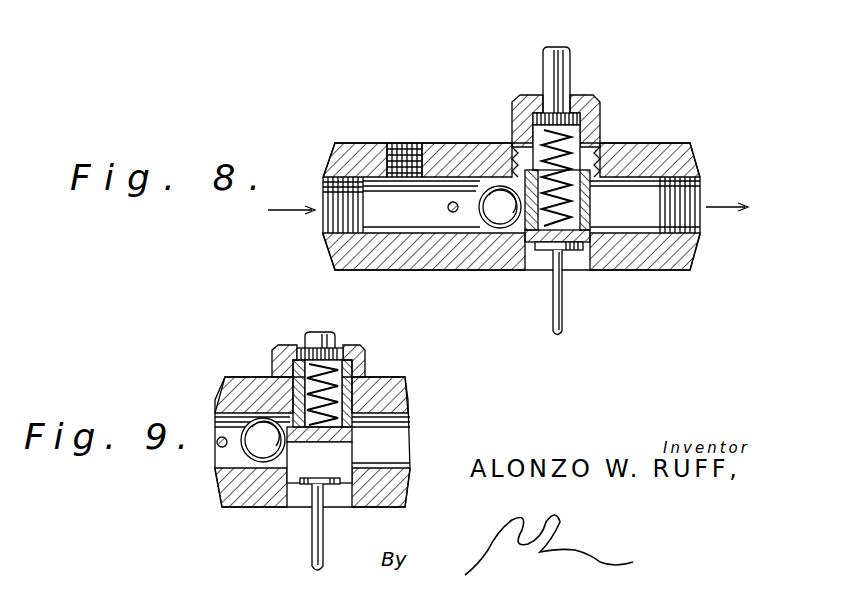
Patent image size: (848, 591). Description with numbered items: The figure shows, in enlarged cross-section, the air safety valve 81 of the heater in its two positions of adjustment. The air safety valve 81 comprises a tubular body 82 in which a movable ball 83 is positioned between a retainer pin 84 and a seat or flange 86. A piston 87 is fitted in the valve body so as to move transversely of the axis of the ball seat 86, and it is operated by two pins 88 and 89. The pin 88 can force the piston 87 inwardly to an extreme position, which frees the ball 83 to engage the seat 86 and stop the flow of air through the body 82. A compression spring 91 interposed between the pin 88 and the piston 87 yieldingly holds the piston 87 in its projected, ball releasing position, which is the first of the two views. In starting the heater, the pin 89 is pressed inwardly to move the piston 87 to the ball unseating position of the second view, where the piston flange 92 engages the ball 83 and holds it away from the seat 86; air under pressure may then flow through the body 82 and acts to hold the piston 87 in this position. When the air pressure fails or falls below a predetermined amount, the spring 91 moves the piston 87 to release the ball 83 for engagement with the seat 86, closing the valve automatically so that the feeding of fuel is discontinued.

In FIG. 8, the air safety valve 81 is at (661, 134).
In FIG. 9, the air safety valve 81 is at (387, 357).
In FIG. 8, the tubular body 82 is at (451, 147).
In FIG. 9, the tubular body 82 is at (397, 377).
In FIG. 8, the movable ball 83 is at (497, 230).
In FIG. 9, the movable ball 83 is at (262, 428).
In FIG. 8, the retainer pin 84 is at (449, 210).
In FIG. 9, the retainer pin 84 is at (216, 445).
In FIG. 8, the seat 86 is at (517, 170).
In FIG. 9, the seat 86 is at (292, 474).
In FIG. 8, the piston 87 is at (584, 202).
In FIG. 9, the piston 87 is at (356, 432).
In FIG. 8, the pin 88 is at (566, 60).
In FIG. 9, the pin 88 is at (323, 334).
In FIG. 8, the pin 89 is at (563, 333).
In FIG. 9, the pin 89 is at (322, 540).
In FIG. 8, the compression spring 91 is at (566, 148).
In FIG. 9, the piston flange 92 is at (300, 449).